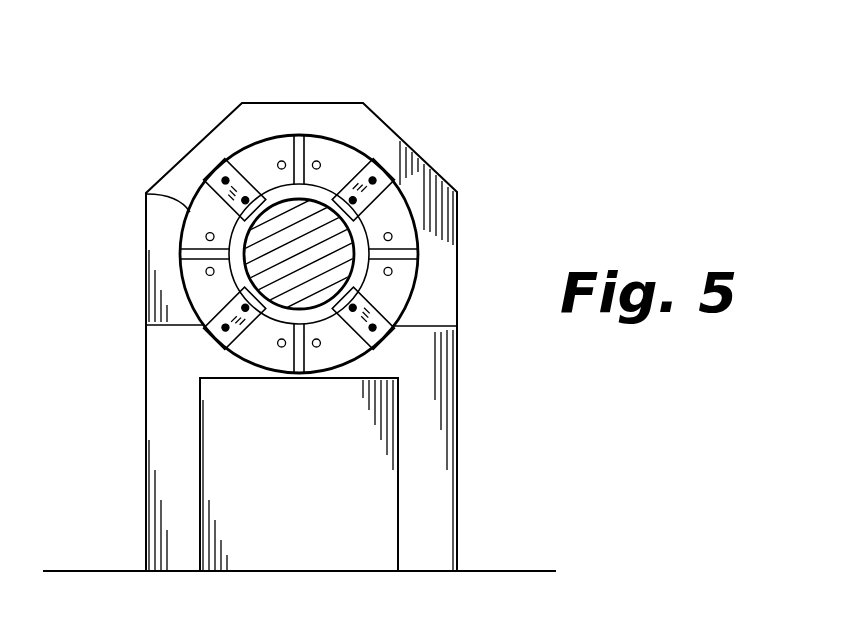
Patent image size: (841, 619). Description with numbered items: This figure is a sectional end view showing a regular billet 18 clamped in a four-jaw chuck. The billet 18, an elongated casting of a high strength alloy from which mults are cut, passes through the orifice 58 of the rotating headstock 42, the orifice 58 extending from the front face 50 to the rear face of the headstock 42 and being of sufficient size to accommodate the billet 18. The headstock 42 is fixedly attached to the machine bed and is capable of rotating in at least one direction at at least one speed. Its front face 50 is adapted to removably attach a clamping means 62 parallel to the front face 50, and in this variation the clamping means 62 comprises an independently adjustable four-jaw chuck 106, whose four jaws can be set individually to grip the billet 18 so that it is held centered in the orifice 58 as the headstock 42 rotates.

The billet 18 is at (323, 253).
The rotating headstock 42 is at (319, 103).
The front face 50 is at (370, 353).
The orifice 58 is at (311, 219).
The clamping means 62 is at (147, 193).
The independently adjustable four-jaw chuck 106 is at (333, 204).